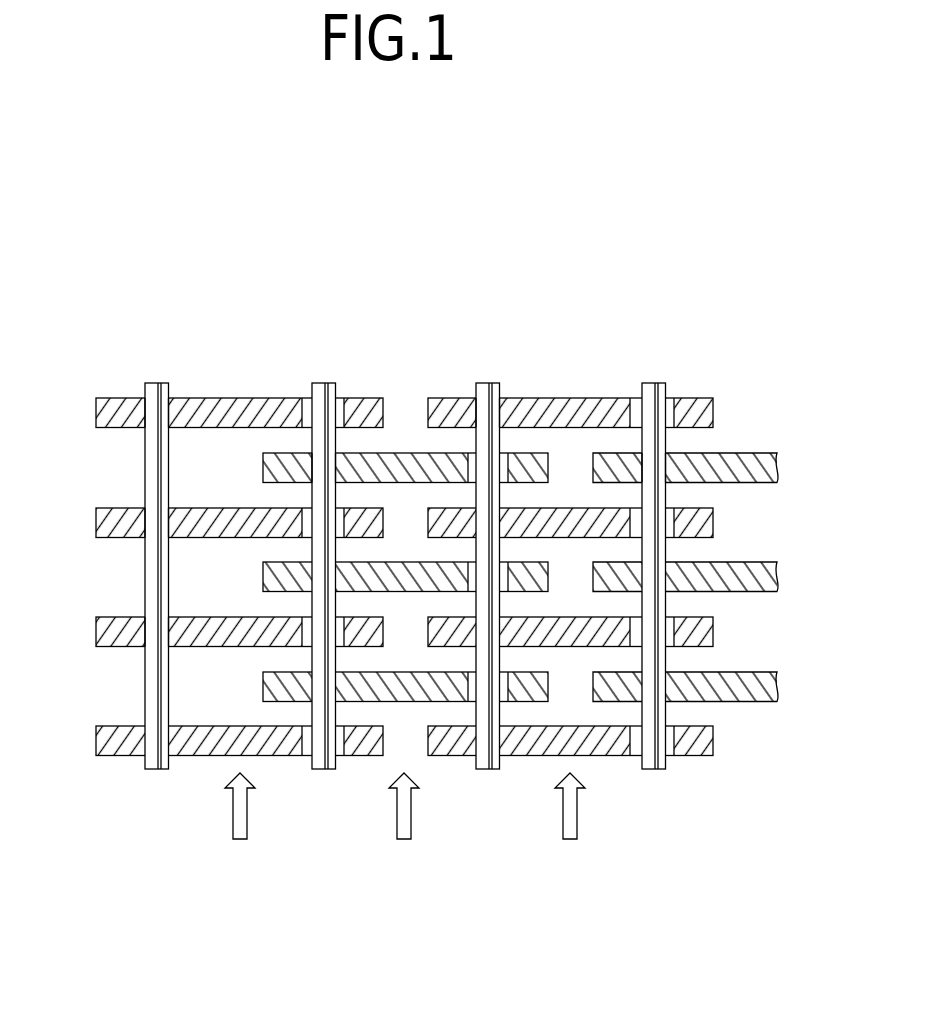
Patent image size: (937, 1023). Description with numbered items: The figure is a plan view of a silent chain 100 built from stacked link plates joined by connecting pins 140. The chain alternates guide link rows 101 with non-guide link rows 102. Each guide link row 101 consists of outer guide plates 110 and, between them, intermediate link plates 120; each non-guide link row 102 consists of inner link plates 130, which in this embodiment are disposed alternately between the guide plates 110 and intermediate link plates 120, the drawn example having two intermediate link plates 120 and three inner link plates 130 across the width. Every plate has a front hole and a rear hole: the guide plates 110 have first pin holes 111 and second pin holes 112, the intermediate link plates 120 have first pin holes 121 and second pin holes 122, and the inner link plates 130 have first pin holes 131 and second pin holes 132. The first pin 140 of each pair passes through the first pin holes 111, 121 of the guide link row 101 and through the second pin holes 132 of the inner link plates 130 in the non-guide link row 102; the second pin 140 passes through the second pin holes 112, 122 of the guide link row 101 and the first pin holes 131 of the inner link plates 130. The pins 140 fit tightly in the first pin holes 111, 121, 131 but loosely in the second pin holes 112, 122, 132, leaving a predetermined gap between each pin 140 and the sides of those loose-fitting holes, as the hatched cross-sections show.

The silent chain 100 is at (653, 285).
The guide plate 110 is at (203, 410).
The first pin hole 111 is at (131, 402).
The second pin hole 112 is at (307, 399).
The intermediate link plate 120 is at (102, 520).
The first pin hole 121 is at (146, 632).
The second pin hole 122 is at (304, 503).
The inner link plate 130 is at (402, 470).
The first pin hole 131 is at (351, 458).
The second pin hole 132 is at (467, 452).
The connecting pin 140 is at (157, 762).
The guide link row 101 is at (406, 825).
The non-guide link row 102 is at (405, 825).